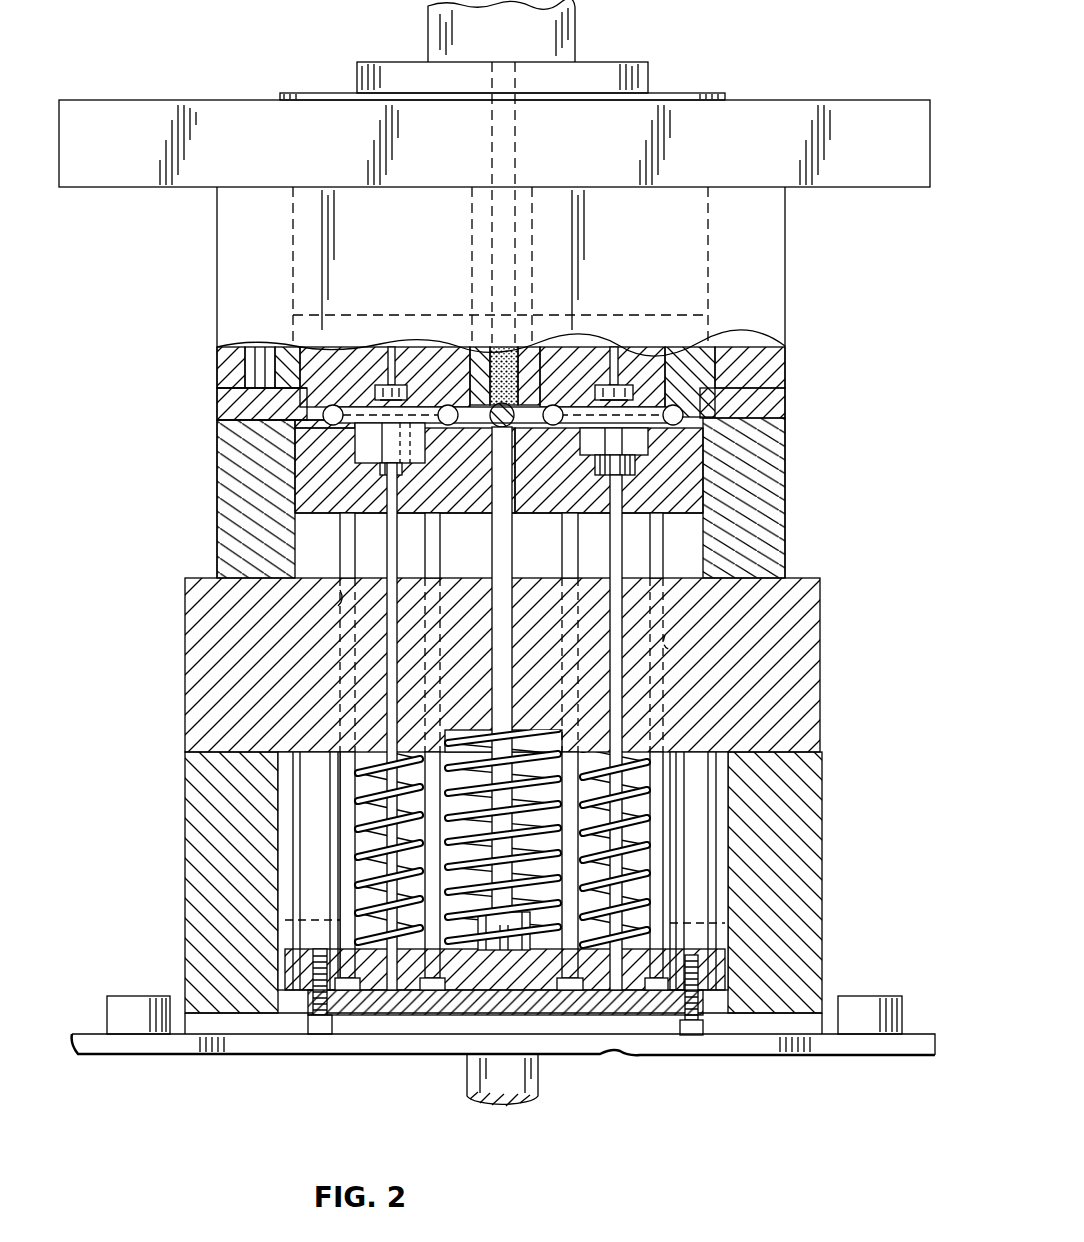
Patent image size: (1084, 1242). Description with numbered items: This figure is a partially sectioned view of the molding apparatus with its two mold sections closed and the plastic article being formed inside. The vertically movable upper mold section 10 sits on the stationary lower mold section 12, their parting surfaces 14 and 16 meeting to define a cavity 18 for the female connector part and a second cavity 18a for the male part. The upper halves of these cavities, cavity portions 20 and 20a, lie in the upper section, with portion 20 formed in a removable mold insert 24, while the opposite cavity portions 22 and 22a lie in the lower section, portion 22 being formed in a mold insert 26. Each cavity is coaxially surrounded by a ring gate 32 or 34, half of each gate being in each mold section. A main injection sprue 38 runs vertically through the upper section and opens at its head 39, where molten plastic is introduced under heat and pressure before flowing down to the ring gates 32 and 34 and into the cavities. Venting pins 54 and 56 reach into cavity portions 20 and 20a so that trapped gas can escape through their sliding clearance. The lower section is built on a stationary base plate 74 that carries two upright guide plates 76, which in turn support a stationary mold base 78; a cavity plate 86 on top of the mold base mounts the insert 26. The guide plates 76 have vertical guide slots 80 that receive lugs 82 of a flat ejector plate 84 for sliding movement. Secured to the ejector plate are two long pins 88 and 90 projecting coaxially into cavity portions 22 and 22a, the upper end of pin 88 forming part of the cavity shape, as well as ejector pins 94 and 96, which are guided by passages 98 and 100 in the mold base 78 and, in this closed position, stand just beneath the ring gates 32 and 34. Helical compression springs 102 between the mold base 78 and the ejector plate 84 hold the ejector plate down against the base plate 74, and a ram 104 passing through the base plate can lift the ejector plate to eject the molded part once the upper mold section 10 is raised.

The upper mold section 10 is at (790, 300).
The lower mold section 12 is at (507, 382).
The parting surface 14 is at (325, 422).
The parting surface 16 is at (286, 347).
The cavity 18 is at (405, 486).
The cavity 18a is at (680, 442).
The cavity portion 20 is at (428, 395).
The cavity portion 20a is at (650, 400).
The cavity portion 22 is at (395, 480).
The cavity portion 22a is at (598, 465).
The mold insert 24 is at (380, 382).
The mold insert 26 is at (499, 490).
The ring gate 32 is at (385, 360).
The ring gate 34 is at (605, 360).
The main injection sprue 38 is at (508, 142).
The head 39 is at (520, 68).
The venting pin 54 is at (408, 345).
The venting pin 56 is at (628, 345).
The base plate 74 is at (845, 1054).
The guide plate 76 is at (185, 860).
The mold base 78 is at (810, 677).
The guide slot 80 is at (283, 800).
The lug 82 is at (290, 963).
The ejector plate 84 is at (375, 1000).
The cavity plate 86 is at (225, 518).
The pin 88 is at (388, 650).
The pin 90 is at (622, 690).
The ejector pin 94 is at (340, 775).
The ejector pin 96 is at (655, 530).
The passage 98 is at (340, 597).
The passage 100 is at (672, 650).
The helical compression spring 102 is at (470, 735).
The ram 104 is at (545, 1084).